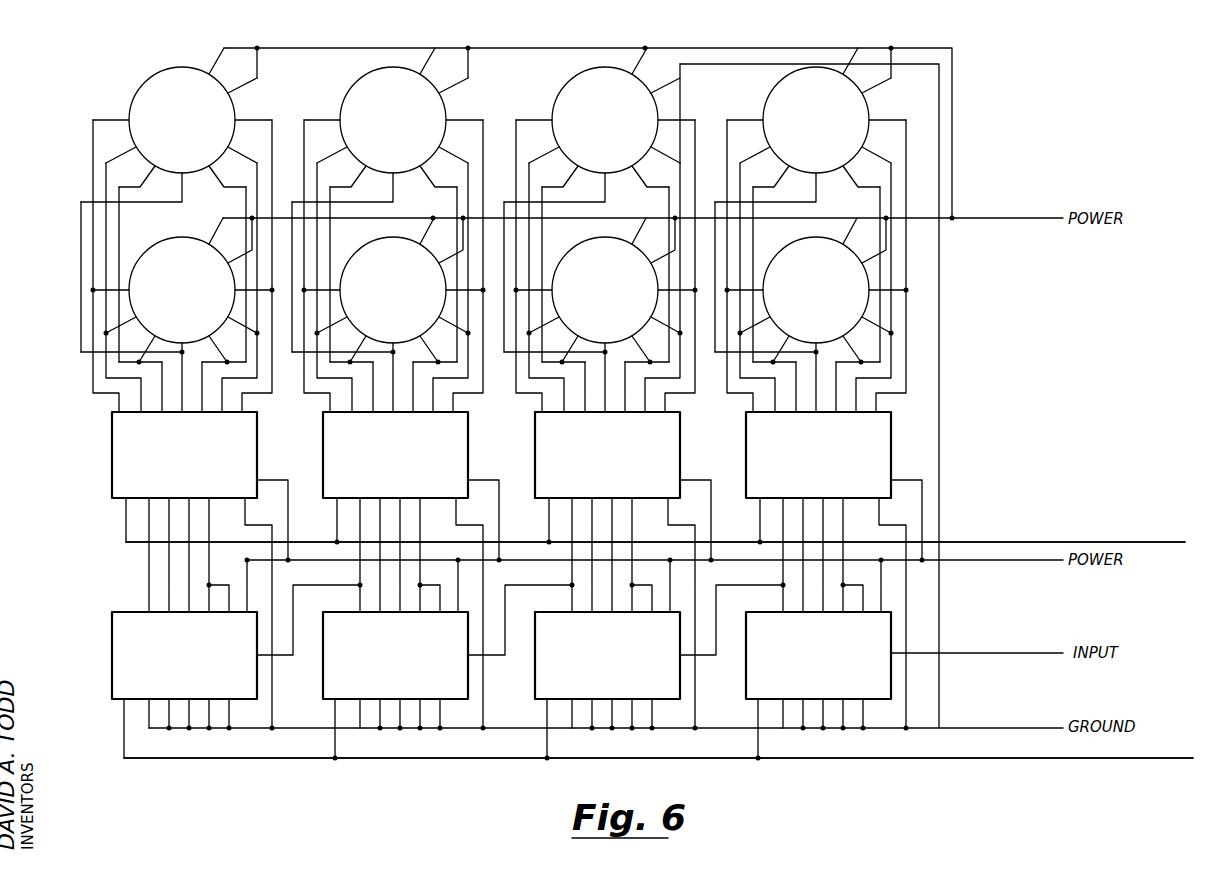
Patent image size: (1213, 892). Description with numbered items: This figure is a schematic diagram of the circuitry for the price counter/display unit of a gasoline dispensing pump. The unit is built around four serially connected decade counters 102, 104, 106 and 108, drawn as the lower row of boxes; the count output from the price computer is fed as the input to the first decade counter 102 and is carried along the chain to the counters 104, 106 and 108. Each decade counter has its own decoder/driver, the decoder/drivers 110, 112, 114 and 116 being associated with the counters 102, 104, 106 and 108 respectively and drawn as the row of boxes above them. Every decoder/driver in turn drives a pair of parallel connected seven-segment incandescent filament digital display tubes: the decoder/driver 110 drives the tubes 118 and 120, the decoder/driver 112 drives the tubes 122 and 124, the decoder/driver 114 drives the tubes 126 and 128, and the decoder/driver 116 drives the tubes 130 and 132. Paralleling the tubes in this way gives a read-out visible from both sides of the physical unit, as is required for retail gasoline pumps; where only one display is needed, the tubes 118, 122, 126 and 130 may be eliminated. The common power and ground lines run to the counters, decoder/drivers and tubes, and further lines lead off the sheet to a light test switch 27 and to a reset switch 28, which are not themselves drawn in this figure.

The light test switch 27 is at (657, 531).
The reset switch 28 is at (658, 748).
The decade counter 102 is at (746, 700).
The decade counter 104 is at (535, 700).
The decade counter 106 is at (323, 700).
The decade counter 108 is at (112, 653).
The decoder/driver 110 is at (746, 441).
The decoder/driver 112 is at (535, 441).
The decoder/driver 114 is at (323, 441).
The decoder/driver 116 is at (112, 441).
The seven-segment incandescent filament digital display tube 118 is at (811, 243).
The seven-segment incandescent filament digital display tube 120 is at (774, 94).
The seven-segment incandescent filament digital display tube 122 is at (599, 243).
The seven-segment incandescent filament digital display tube 124 is at (576, 73).
The seven-segment incandescent filament digital display tube 126 is at (387, 243).
The seven-segment incandescent filament digital display tube 128 is at (364, 73).
The seven-segment incandescent filament digital display tube 130 is at (176, 240).
The seven-segment incandescent filament digital display tube 132 is at (153, 73).